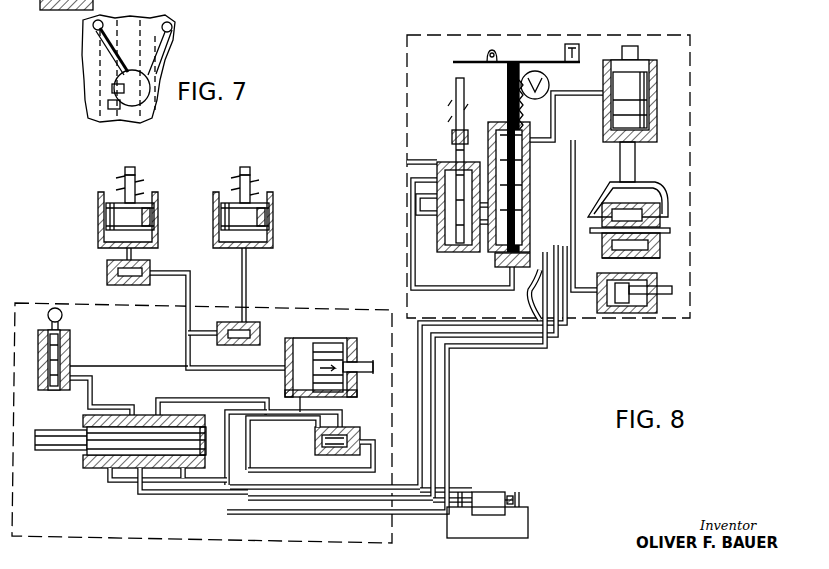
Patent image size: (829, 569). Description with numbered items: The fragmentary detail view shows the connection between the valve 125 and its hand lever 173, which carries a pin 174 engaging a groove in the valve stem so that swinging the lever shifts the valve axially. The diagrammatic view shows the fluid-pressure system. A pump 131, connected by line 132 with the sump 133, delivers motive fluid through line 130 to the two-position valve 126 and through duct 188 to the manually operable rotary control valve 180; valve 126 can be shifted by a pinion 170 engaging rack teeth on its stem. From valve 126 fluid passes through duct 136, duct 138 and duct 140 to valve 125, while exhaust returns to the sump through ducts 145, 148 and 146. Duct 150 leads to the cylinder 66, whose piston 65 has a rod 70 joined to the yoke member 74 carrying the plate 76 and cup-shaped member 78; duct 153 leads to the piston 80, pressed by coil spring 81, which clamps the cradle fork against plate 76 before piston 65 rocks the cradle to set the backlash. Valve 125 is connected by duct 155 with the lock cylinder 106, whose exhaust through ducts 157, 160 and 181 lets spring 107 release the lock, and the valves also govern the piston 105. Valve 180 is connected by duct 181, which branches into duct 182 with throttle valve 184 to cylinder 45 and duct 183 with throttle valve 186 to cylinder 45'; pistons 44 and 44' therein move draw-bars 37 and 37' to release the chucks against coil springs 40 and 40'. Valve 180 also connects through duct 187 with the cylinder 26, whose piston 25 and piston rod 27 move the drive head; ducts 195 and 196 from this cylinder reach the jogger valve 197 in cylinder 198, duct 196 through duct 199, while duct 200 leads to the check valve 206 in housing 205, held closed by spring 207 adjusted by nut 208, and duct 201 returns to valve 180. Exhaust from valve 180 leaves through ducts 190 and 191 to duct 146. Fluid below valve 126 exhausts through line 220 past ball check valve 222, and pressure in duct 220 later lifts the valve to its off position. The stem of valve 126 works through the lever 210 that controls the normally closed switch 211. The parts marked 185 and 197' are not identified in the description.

In FIG. 7, the valve 125 is at (147, 30).
In FIG. 8, the valve 125 is at (437, 163).
In FIG. 7, the hand lever 173 is at (96, 38).
In FIG. 7, the pin 174 is at (116, 88).
In FIG. 8, the draw-bar 37 is at (142, 161).
In FIG. 8, the coil spring 40 is at (148, 186).
In FIG. 8, the piston 44 is at (149, 216).
In FIG. 8, the cylinder 45 is at (104, 220).
In FIG. 8, the draw-bar 37' is at (261, 161).
In FIG. 8, the coil spring 40' is at (266, 188).
In FIG. 8, the piston 44' is at (265, 214).
In FIG. 8, the cylinder 45' is at (263, 220).
In FIG. 8, the duct 182 is at (176, 271).
In FIG. 8, the adjustable throttle valve 184 is at (113, 285).
In FIG. 8, the adjustable throttle valve 186 is at (242, 318).
In FIG. 8, the duct 183 is at (212, 335).
In FIG. 8, the duct 187 is at (246, 397).
In FIG. 8, the duct 199 is at (127, 364).
In FIG. 8, the duct 195 is at (96, 396).
In FIG. 8, the duct 196 is at (350, 392).
In FIG. 8, the jogger valve 197 is at (80, 359).
In FIG. 8, the control knob 197' is at (80, 317).
In FIG. 8, the cylinder 198 is at (40, 380).
In FIG. 8, the duct 201 is at (136, 412).
In FIG. 8, the duct 181 is at (173, 398).
In FIG. 8, the manually operable rotary control valve 180 is at (64, 443).
In FIG. 8, the pipe 185 is at (102, 470).
In FIG. 8, the duct 190 is at (134, 482).
In FIG. 8, the duct 191 is at (186, 473).
In FIG. 8, the cylinder 26 is at (295, 332).
In FIG. 8, the piston 25 is at (330, 343).
In FIG. 8, the piston rod 27 is at (368, 360).
In FIG. 8, the check valve 206 is at (360, 438).
In FIG. 8, the spring 207 is at (322, 442).
In FIG. 8, the nut 208 is at (330, 450).
In FIG. 8, the duct 200 is at (257, 448).
In FIG. 8, the housing 205 is at (370, 454).
In FIG. 8, the duct 146 is at (290, 486).
In FIG. 8, the duct 188 is at (337, 510).
In FIG. 8, the pump 131 is at (490, 488).
In FIG. 8, the line 132 is at (514, 497).
In FIG. 8, the sump 133 is at (505, 527).
In FIG. 8, the duct 145 is at (450, 398).
In FIG. 8, the line 130 is at (437, 430).
In FIG. 8, the duct 220 is at (535, 330).
In FIG. 8, the ball check valve 222 is at (515, 265).
In FIG. 8, the duct 155 is at (440, 290).
In FIG. 8, the duct 160 is at (429, 208).
In FIG. 8, the duct 157 is at (433, 218).
In FIG. 8, the duct 138 is at (436, 163).
In FIG. 8, the duct 150 is at (566, 116).
In FIG. 8, the duct 140 is at (517, 211).
In FIG. 8, the duct 153 is at (580, 289).
In FIG. 8, the lever 210 is at (535, 55).
In FIG. 8, the switch 211 is at (579, 54).
In FIG. 8, the pinion 170 is at (548, 90).
In FIG. 8, the valve 126 is at (510, 90).
In FIG. 8, the duct 136 is at (488, 140).
In FIG. 8, the duct 148 is at (480, 102).
In FIG. 8, the cylinder 66 is at (648, 62).
In FIG. 8, the piston 65 is at (647, 104).
In FIG. 8, the piston rod 70 is at (636, 162).
In FIG. 8, the coil spring 81 is at (650, 182).
In FIG. 8, the piston 80 is at (631, 206).
In FIG. 8, the yoke member 74 is at (668, 205).
In FIG. 8, the plate 76 is at (662, 248).
In FIG. 8, the cup-shaped member 78 is at (640, 262).
In FIG. 8, the piston 105 is at (620, 314).
In FIG. 8, the lock cylinder 106 is at (610, 312).
In FIG. 8, the spring 107 is at (656, 298).